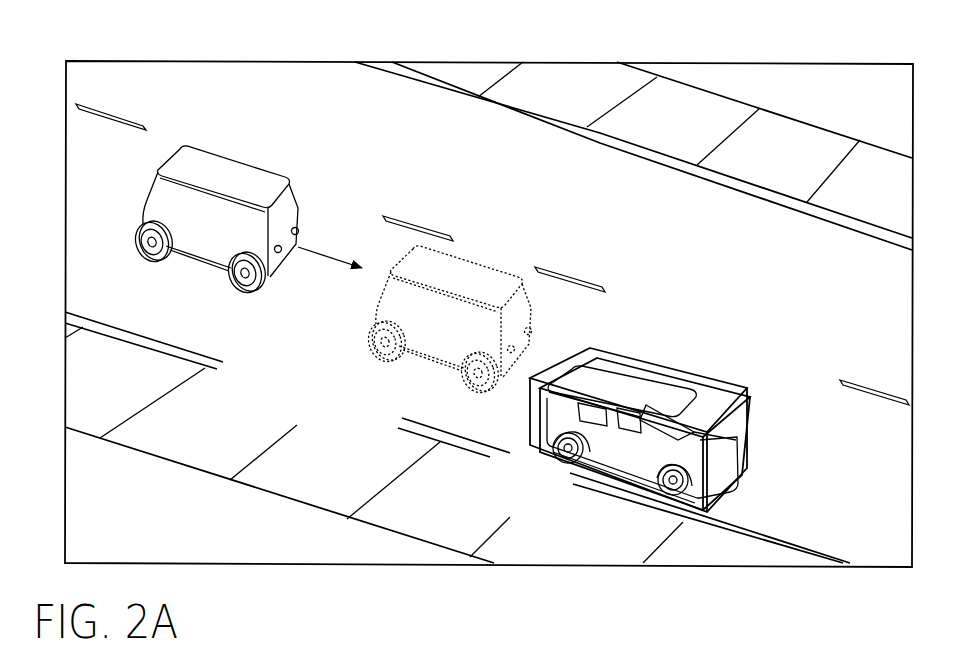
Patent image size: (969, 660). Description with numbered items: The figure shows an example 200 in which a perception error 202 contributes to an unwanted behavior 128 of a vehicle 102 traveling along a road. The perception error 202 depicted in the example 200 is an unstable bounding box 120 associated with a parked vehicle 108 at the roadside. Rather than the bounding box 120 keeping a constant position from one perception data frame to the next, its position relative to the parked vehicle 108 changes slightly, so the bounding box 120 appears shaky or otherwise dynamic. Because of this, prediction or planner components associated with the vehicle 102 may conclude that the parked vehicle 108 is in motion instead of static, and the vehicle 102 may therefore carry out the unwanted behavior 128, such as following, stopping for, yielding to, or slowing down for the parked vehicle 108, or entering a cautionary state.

The example 200 is at (93, 26).
The vehicle 102 is at (252, 167).
The unwanted behavior 128 is at (424, 371).
The bounding box 120 is at (570, 462).
The perception error 202 is at (665, 357).
The parked vehicle 108 is at (730, 426).